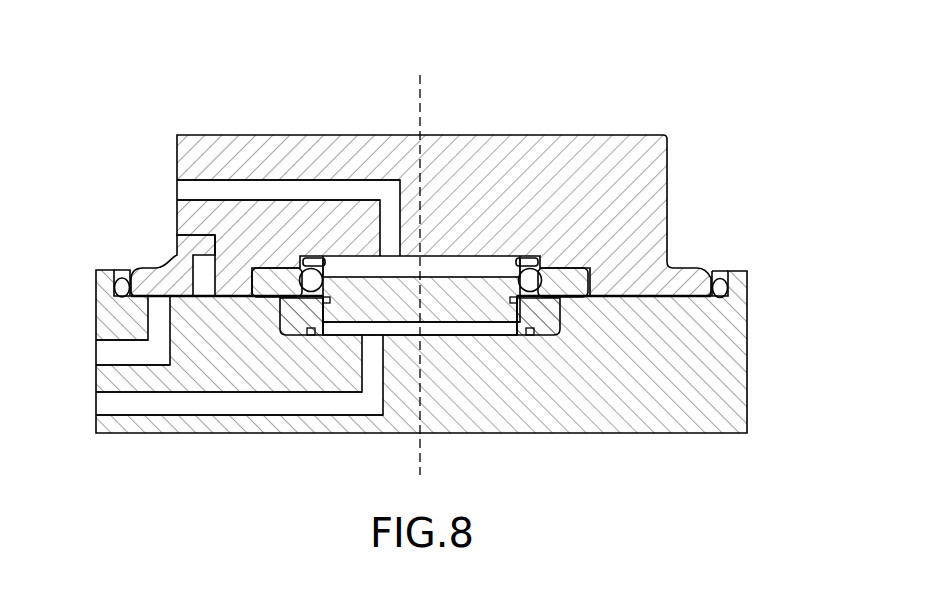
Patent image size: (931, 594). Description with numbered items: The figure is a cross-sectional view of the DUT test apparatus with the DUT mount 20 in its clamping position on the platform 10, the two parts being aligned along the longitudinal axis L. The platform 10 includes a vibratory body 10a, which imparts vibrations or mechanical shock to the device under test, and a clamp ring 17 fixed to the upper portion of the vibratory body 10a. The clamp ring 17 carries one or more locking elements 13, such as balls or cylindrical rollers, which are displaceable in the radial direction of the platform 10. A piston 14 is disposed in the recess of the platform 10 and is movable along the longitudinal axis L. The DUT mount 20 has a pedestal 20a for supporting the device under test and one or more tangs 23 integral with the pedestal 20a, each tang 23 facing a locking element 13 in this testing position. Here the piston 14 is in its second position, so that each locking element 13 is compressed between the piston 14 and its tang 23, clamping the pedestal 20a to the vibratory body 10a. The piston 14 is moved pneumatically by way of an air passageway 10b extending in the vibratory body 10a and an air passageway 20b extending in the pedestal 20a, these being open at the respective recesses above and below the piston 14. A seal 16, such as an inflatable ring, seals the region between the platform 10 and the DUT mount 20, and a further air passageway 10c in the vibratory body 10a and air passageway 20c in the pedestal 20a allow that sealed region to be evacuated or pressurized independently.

The platform 10 is at (437, 371).
The vibratory body 10a is at (705, 405).
The air passageway 10b is at (197, 413).
The air passageway 10c is at (133, 364).
The locking element 13 is at (317, 271).
The piston 14 is at (482, 310).
The seal 16 is at (112, 285).
The clamp ring 17 is at (552, 315).
The DUT mount 20 is at (448, 194).
The pedestal 20a is at (645, 173).
The air passageway 20b is at (240, 180).
The air passageway 20c is at (190, 232).
The tang 23 is at (265, 285).
The longitudinal axis L is at (430, 275).